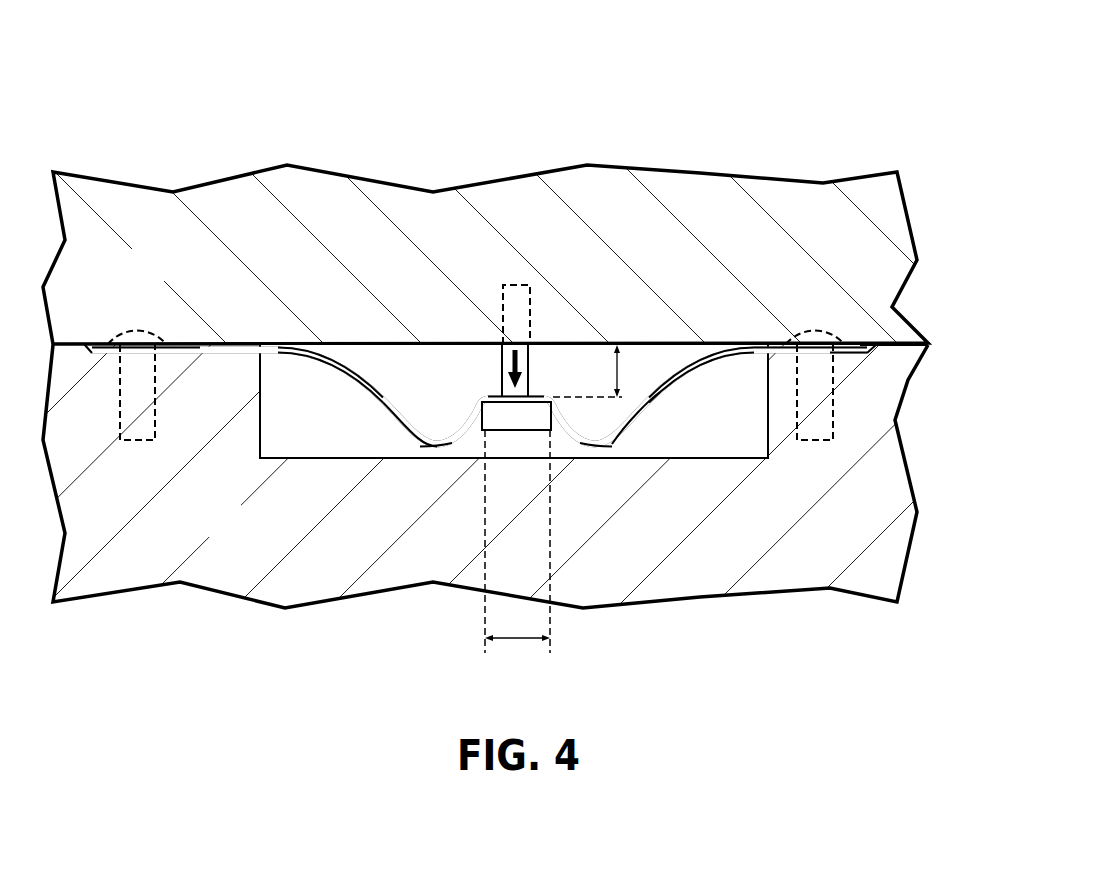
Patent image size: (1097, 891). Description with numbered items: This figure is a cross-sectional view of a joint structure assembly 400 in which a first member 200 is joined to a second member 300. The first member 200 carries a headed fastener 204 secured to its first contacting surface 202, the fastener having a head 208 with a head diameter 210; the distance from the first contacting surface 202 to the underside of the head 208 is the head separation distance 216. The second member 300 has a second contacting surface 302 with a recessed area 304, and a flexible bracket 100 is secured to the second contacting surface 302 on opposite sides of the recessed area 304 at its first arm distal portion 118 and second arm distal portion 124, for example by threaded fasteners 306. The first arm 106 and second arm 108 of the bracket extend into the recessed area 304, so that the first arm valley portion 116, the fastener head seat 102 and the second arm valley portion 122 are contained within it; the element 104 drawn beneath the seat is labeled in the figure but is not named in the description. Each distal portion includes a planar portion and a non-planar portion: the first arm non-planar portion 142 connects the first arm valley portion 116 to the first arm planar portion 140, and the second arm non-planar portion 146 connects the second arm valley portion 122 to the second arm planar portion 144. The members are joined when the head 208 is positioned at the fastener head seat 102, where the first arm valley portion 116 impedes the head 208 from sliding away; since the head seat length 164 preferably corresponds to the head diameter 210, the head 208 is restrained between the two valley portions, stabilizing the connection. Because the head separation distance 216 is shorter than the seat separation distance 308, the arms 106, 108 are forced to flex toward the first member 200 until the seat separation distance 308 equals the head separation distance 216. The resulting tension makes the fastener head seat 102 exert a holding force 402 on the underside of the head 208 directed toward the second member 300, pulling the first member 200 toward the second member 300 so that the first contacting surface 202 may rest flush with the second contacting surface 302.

The flexible bracket 100 is at (687, 356).
The fastener head seat 102 is at (495, 393).
The contact block 104 is at (490, 414).
The first arm 106 is at (368, 365).
The second arm 108 is at (775, 344).
The first arm valley portion 116 is at (440, 447).
The first arm distal portion 118 is at (290, 357).
The second arm valley portion 122 is at (597, 447).
The second arm distal portion 124 is at (725, 377).
The first arm planar portion 140 is at (103, 343).
The first arm non-planar portion 142 is at (341, 362).
The second arm planar portion 144 is at (855, 344).
The second arm non-planar portion 146 is at (673, 371).
The head seat length 164 is at (530, 562).
The first member 200 is at (176, 278).
The first contacting surface 202 is at (905, 344).
The headed fastener 204 is at (502, 311).
The head 208 is at (513, 431).
The head diameter 210 is at (512, 645).
The head separation distance 216 is at (682, 409).
The second member 300 is at (238, 534).
The second contacting surface 302 is at (895, 345).
The recessed area 304 is at (355, 434).
The threaded fasteners 306 is at (133, 442).
The seat separation distance 308 is at (617, 375).
The joint structure assembly 400 is at (548, 347).
The holding force 402 is at (520, 360).